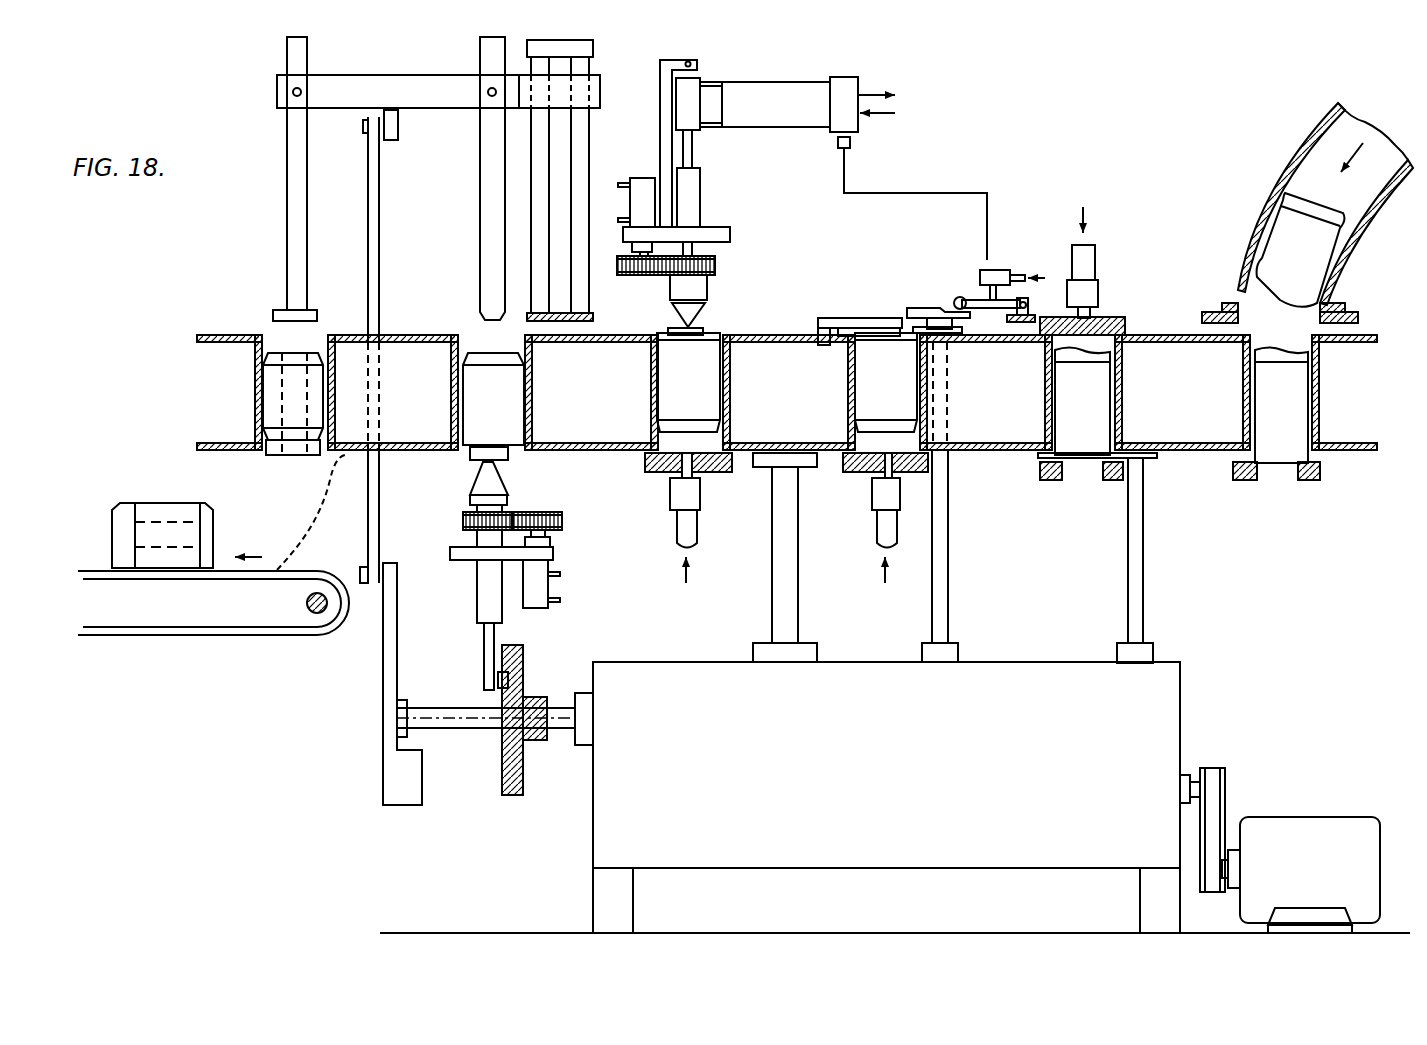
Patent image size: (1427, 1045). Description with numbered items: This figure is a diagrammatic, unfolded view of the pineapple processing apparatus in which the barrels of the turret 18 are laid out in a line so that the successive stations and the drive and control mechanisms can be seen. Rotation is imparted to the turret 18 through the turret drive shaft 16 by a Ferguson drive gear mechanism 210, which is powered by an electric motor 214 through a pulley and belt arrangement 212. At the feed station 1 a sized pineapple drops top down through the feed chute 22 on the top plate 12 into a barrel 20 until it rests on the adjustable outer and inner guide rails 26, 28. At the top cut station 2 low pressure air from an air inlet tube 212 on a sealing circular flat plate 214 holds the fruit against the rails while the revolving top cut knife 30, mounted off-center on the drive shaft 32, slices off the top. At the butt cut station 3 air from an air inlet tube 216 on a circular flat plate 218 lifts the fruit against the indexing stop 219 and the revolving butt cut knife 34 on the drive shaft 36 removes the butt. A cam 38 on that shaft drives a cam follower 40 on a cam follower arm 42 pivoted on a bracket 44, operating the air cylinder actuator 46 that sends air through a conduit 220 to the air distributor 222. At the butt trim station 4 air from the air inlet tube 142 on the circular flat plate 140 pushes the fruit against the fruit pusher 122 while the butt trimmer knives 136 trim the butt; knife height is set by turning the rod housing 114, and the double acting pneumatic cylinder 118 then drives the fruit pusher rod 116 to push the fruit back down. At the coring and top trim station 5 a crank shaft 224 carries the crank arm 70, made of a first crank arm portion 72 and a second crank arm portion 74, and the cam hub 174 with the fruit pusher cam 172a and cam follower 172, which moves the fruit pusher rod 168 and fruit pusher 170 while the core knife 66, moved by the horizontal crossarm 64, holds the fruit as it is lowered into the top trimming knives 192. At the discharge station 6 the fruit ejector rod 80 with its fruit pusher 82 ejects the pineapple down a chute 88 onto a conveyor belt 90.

The feed station 1 is at (1277, 499).
The top cut station 2 is at (1072, 487).
The butt cut station 3 is at (862, 308).
The butt trim station 4 is at (650, 328).
The coring and top trim station 5 is at (450, 465).
The discharge station 6 is at (247, 320).
The top plate 12 is at (1020, 323).
The turret drive shaft 16 is at (798, 597).
The turret 18 is at (1357, 446).
The barrel 20 is at (1312, 397).
The feed chute 22 is at (1370, 208).
The outer guide rail 26 is at (1110, 482).
The inner guide rail 28 is at (1043, 483).
The top cut knife 30 is at (1155, 458).
The drive shaft 32 is at (1143, 575).
The butt cut knife 34 is at (873, 338).
The drive shaft 36 is at (948, 557).
The cam 38 is at (921, 308).
The cam follower 40 is at (958, 297).
The cam follower arm 42 is at (997, 309).
The bracket 44 is at (1028, 302).
The air cylinder actuator 46 is at (1003, 270).
The horizontal crossarm 64 is at (413, 78).
The core knife 66 is at (493, 284).
The crank arm 70 is at (362, 672).
The first crank arm portion 72 is at (397, 632).
The second crank arm portion 74 is at (379, 224).
The fruit ejector rod 80 is at (287, 201).
The fruit pusher 82 is at (315, 311).
The chute 88 is at (322, 525).
The conveyor belt 90 is at (222, 568).
The rod housing 114 is at (700, 200).
The fruit pusher rod 116 is at (692, 155).
The double acting pneumatic cylinder 118 is at (697, 82).
The fruit pusher 122 is at (716, 332).
The butt trimmer knives 136 is at (703, 318).
The circular flat plate 140 is at (655, 473).
The air inlet tube 142 is at (677, 527).
The fruit pusher rod 168 is at (484, 658).
The fruit pusher 170 is at (510, 455).
The cam follower 172 is at (510, 680).
The fruit pusher cam 172a is at (518, 650).
The cam hub 174 is at (530, 712).
The top trimming knives 192 is at (507, 487).
The gear mechanism 210 is at (593, 852).
The pulley and belt arrangement 212 is at (1096, 259).
The electric motor 214 is at (1125, 320).
The air inlet tube 216 is at (877, 527).
The circular flat plate 218 is at (858, 474).
The indexing stop 219 is at (833, 318).
The conduit 220 is at (933, 193).
The air distributor 222 is at (858, 80).
The crank shaft 224 is at (478, 722).